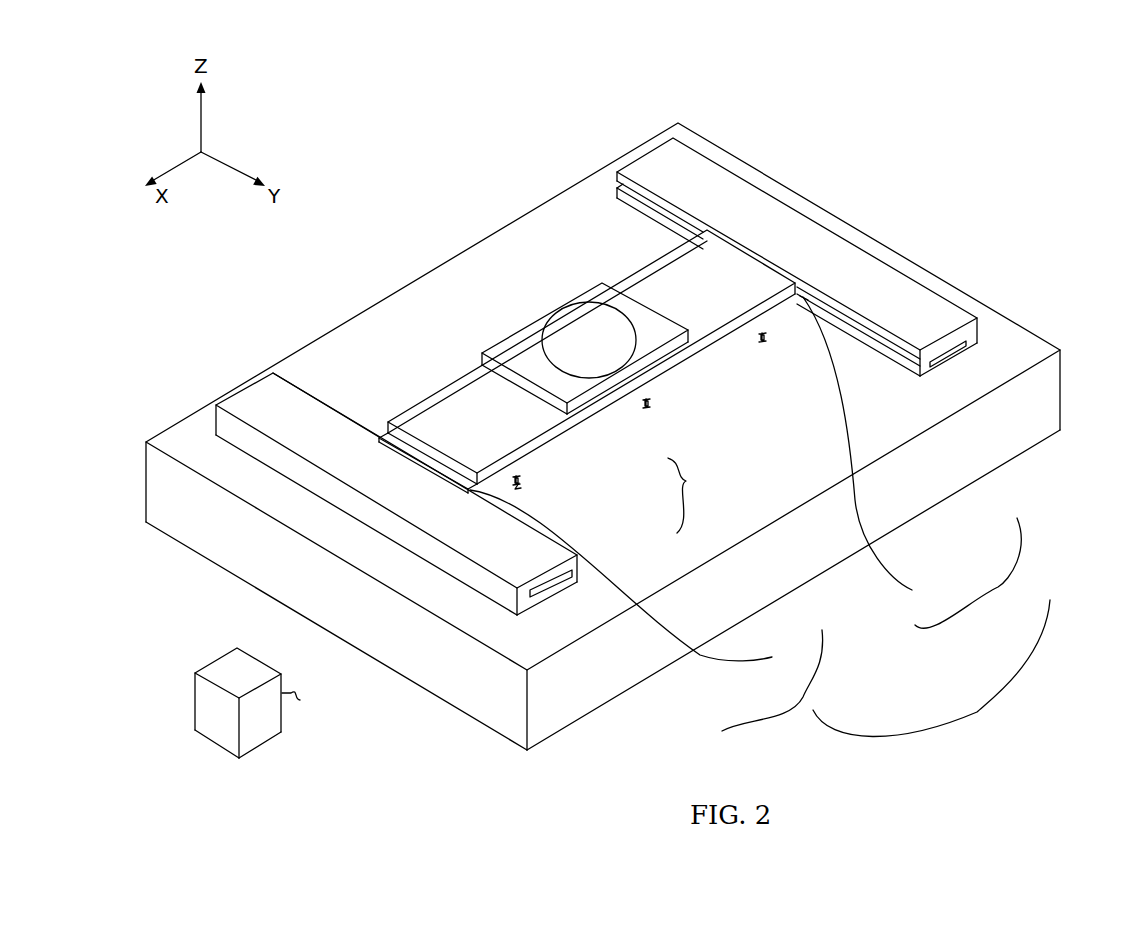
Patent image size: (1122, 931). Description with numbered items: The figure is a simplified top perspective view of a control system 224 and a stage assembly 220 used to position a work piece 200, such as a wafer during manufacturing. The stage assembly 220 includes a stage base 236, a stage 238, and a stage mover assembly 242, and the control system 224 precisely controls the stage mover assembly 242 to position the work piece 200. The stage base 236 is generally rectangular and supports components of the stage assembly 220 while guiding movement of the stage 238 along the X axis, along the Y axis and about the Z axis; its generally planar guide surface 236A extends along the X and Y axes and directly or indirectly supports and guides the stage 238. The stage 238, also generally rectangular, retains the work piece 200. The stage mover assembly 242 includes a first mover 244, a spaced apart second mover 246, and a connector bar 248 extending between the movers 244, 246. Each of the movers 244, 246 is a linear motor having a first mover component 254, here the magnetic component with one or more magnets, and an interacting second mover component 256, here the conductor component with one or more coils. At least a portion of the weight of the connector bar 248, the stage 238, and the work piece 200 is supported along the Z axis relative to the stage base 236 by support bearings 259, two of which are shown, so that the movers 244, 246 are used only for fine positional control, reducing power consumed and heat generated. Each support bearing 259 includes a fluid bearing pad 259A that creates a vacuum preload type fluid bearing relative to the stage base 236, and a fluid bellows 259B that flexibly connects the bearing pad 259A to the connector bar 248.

The work piece 200 is at (585, 318).
The stage assembly 220 is at (577, 704).
The control system 224 is at (237, 730).
The stage base 236 is at (323, 367).
The guide surface 236A is at (443, 333).
The stage 238 is at (522, 328).
The stage mover assembly 242 is at (931, 668).
The first mover 244 is at (786, 680).
The second mover 246 is at (830, 383).
The connector bar 248 is at (432, 397).
The first mover component 254 is at (940, 358).
The second mover component 256 is at (711, 483).
The support bearing 259 is at (704, 433).
The fluid bearing pad 259A is at (524, 487).
The fluid bellows 259B is at (518, 480).